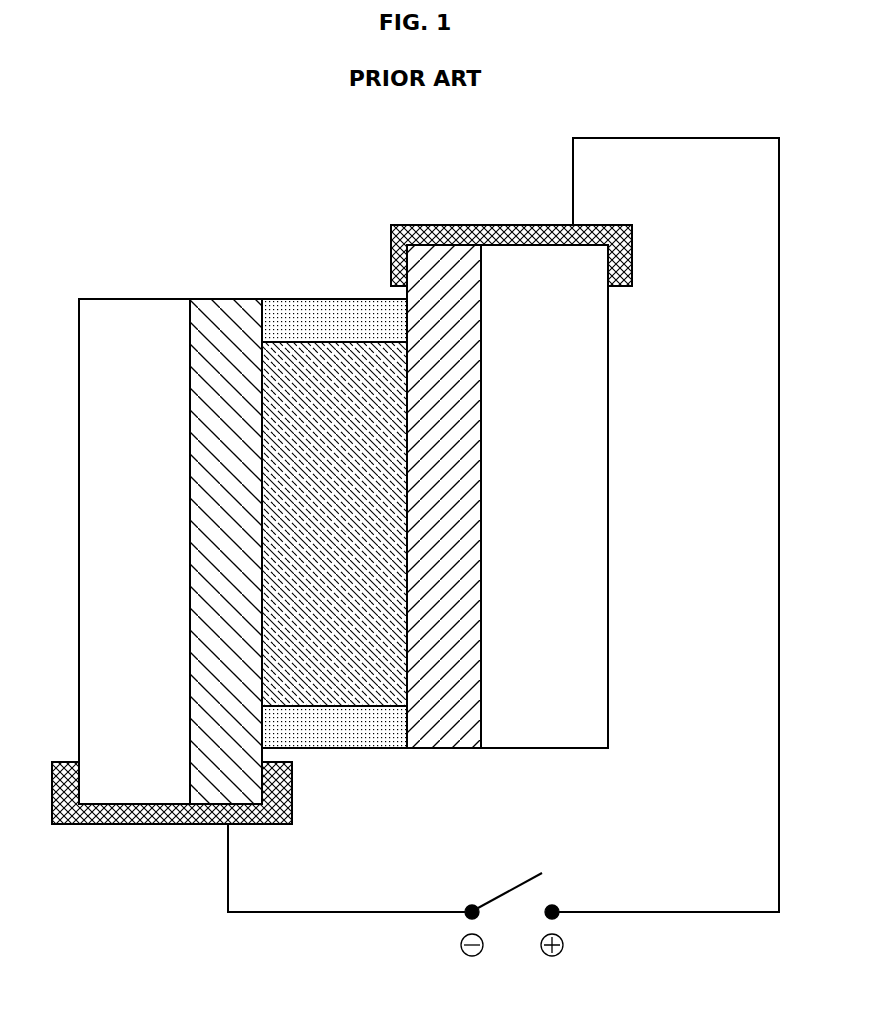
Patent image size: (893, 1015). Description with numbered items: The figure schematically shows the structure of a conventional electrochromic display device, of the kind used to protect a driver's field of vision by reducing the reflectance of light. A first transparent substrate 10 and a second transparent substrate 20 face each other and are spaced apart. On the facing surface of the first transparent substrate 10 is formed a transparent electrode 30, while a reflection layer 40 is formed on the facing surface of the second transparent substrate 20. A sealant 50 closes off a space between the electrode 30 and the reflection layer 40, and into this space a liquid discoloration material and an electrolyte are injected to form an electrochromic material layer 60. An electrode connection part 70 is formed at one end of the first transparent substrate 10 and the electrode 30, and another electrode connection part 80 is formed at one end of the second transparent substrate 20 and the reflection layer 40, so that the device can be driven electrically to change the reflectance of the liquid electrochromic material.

The first transparent substrate 10 is at (130, 323).
The second transparent substrate 20 is at (533, 268).
The electrode 30 is at (222, 322).
The reflection layer 40 is at (433, 267).
The sealant 50 is at (333, 320).
The electrochromic material layer 60 is at (350, 690).
The electrode connection part 70 is at (175, 812).
The electrode connection part 80 is at (487, 230).